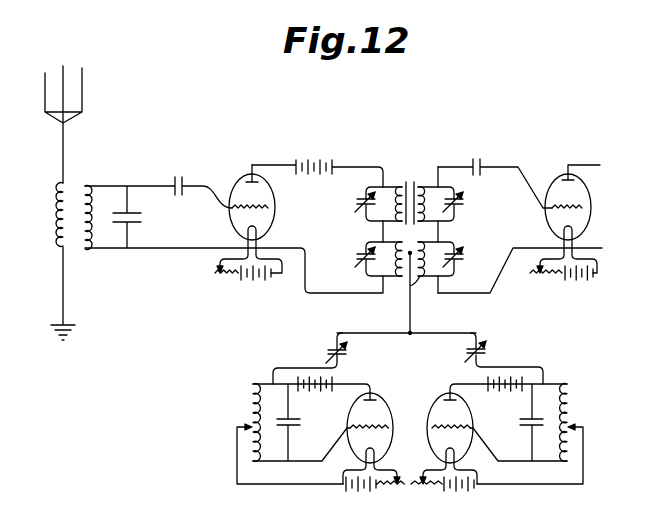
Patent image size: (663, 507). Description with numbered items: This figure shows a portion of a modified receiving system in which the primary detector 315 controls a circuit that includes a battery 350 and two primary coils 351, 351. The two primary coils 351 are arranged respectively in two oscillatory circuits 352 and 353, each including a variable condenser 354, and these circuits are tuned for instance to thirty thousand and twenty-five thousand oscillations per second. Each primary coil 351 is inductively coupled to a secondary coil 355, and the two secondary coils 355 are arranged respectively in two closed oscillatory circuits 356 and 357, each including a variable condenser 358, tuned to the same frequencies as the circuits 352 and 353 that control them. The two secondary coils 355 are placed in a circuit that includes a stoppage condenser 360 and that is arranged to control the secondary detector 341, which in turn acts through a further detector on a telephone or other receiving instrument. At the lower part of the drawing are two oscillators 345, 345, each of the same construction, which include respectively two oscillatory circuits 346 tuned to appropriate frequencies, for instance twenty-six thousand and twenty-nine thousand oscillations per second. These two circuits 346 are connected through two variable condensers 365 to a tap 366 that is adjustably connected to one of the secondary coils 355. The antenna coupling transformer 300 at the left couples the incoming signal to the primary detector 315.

The antenna coupling transformer 300 is at (82, 184).
The primary detector 315 is at (248, 222).
The secondary detector 341 is at (592, 208).
The oscillator 345 is at (292, 484).
The oscillatory circuit 346 is at (270, 411).
The battery 350 is at (317, 151).
The primary coil 351 is at (398, 183).
The oscillatory circuit 352 is at (379, 187).
The oscillatory circuit 353 is at (377, 266).
The variable condenser 354 is at (359, 201).
The secondary coil 355 is at (419, 183).
The closed oscillatory circuit 356 is at (460, 197).
The closed oscillatory circuit 357 is at (449, 274).
The variable condenser 358 is at (464, 209).
The stoppage condenser 360 is at (478, 156).
The variable condenser 365 is at (328, 352).
The tap 366 is at (410, 252).